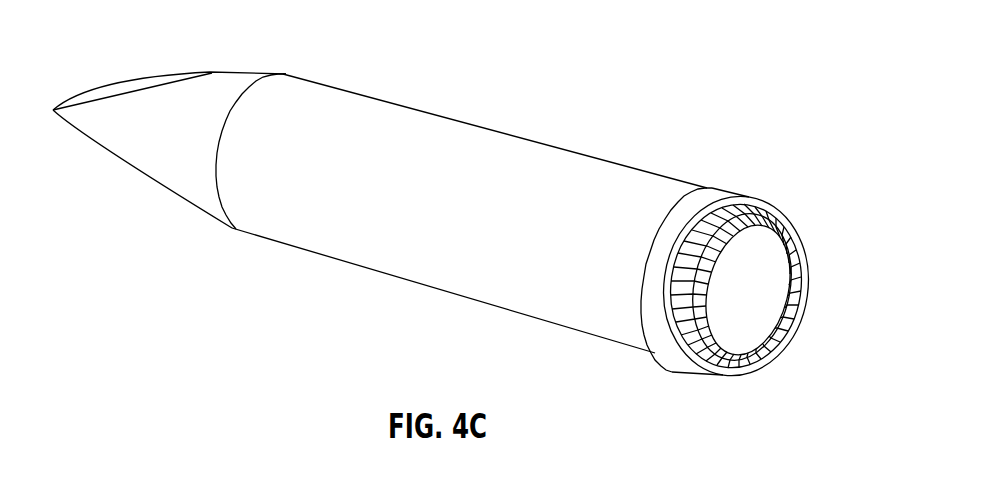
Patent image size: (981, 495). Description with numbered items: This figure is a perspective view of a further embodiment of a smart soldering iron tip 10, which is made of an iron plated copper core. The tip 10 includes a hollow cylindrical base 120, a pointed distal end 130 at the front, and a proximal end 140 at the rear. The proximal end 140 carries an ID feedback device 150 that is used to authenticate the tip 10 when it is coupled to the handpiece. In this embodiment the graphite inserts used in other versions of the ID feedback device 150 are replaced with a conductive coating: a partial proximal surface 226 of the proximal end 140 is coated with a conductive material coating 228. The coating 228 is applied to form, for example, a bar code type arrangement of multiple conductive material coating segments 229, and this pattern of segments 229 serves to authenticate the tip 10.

The smart soldering iron tip 10 is at (508, 80).
The hollow cylindrical base 120 is at (447, 290).
The pointed distal end 130 is at (130, 173).
The proximal end 140 is at (660, 362).
The ID feedback device 150 is at (810, 215).
The partial proximal surface 226 is at (737, 187).
The conductive material coating 228 is at (808, 282).
The conductive material coating segments 229 is at (756, 362).